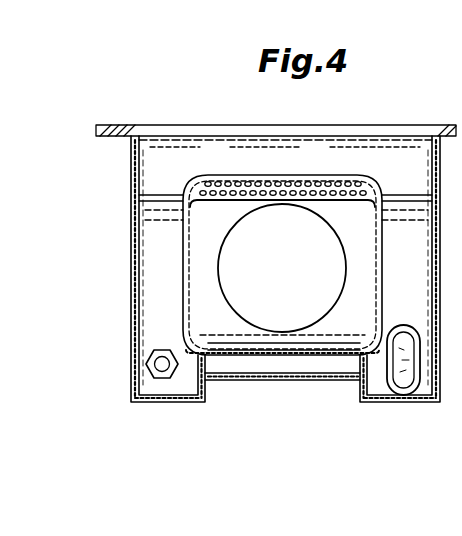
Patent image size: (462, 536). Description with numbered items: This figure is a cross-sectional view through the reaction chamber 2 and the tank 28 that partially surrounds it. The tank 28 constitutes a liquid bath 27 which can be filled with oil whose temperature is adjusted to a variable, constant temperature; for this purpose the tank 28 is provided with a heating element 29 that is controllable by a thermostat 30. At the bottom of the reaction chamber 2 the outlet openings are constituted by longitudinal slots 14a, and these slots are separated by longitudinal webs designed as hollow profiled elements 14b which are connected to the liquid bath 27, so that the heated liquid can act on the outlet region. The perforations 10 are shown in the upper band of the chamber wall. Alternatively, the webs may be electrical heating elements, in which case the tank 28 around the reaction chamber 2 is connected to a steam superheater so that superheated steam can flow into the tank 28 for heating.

The reaction chamber 2 is at (183, 238).
The perforations 10 is at (257, 184).
The longitudinal slots 14a is at (248, 347).
The hollow profiled elements 14b is at (322, 370).
The liquid bath 27 is at (165, 273).
The tank 28 is at (133, 333).
The heating element 29 is at (412, 395).
The thermostat 30 is at (162, 378).